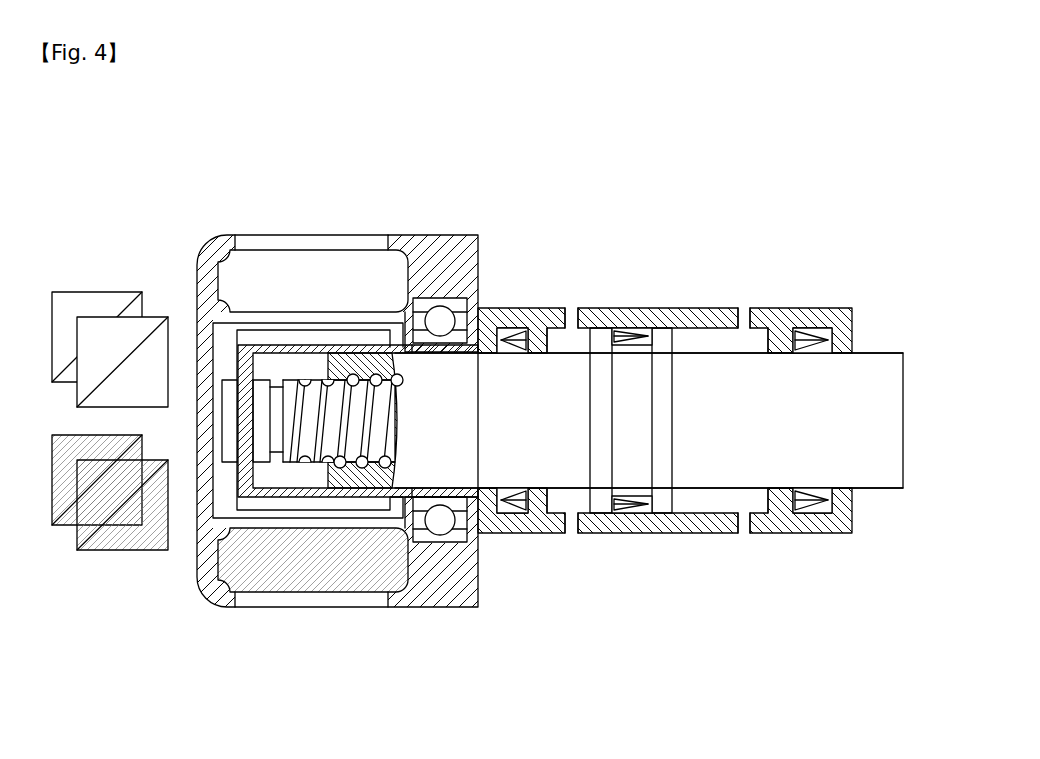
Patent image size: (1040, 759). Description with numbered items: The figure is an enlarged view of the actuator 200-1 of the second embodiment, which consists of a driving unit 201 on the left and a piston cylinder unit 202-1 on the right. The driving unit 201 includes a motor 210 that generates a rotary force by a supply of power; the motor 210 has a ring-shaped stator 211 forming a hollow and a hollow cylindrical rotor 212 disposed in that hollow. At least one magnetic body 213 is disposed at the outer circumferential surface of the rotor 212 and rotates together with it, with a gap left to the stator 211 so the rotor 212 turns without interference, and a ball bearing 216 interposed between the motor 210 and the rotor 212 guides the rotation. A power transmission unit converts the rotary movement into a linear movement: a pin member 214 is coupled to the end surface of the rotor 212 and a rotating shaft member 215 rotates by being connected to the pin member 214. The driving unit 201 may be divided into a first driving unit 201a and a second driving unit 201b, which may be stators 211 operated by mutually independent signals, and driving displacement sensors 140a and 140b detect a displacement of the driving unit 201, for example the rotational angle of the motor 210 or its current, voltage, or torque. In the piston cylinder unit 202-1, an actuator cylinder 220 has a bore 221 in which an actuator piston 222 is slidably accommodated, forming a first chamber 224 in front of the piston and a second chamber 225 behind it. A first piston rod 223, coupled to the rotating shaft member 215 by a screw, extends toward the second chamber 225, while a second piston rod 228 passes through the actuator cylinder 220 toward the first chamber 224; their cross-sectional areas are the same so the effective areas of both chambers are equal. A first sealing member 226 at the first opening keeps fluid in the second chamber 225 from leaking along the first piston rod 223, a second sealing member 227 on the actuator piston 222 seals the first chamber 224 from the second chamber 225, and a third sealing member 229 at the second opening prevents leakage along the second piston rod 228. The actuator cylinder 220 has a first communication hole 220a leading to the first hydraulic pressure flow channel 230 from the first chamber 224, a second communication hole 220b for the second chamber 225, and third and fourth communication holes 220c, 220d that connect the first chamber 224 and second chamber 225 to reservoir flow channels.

The driving unit 201 is at (223, 226).
The first driving unit 201a is at (266, 225).
The second driving unit 201b is at (289, 620).
The actuator 200-1 is at (470, 160).
The piston cylinder unit 202-1 is at (531, 289).
The stator 211 is at (306, 262).
The motor 210 is at (433, 250).
The rotor 212 is at (245, 472).
The magnetic body 213 is at (323, 504).
The pin member 214 is at (222, 423).
The rotating shaft member 215 is at (378, 440).
The ball bearing 216 is at (432, 541).
The second piston rod 228 is at (880, 409).
The actuator cylinder 220 is at (790, 316).
The first communication hole 220a is at (745, 524).
The second communication hole 220b is at (576, 524).
The third communication hole 220c is at (746, 322).
The fourth communication hole 220d is at (574, 321).
The first sealing member 226 is at (512, 341).
The first piston rod 223 is at (517, 458).
The second sealing member 227 is at (635, 339).
The actuator piston 222 is at (633, 466).
The third sealing member 229 is at (826, 337).
The first hydraulic pressure flow channel 230 is at (848, 512).
The second chamber 225 is at (567, 498).
The first chamber 224 is at (677, 502).
The bore 221 is at (720, 506).
The driving displacement sensor 140a is at (99, 292).
The driving displacement sensor 140b is at (122, 552).